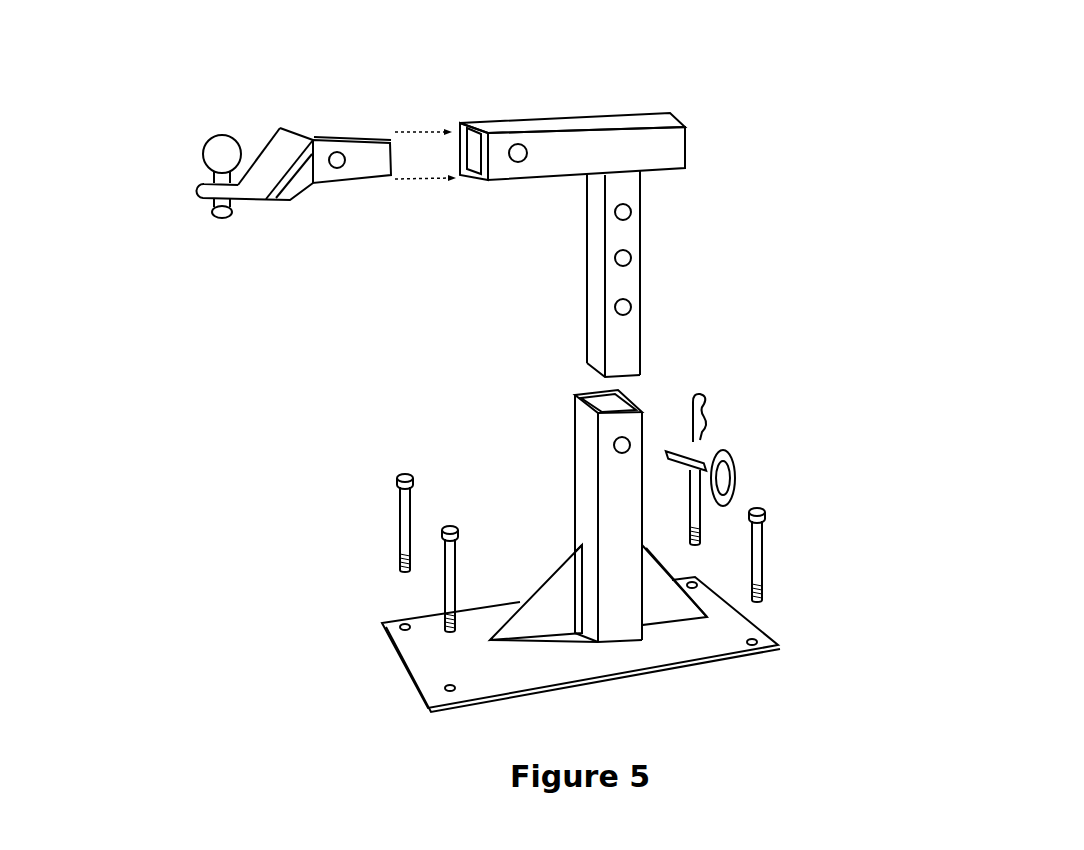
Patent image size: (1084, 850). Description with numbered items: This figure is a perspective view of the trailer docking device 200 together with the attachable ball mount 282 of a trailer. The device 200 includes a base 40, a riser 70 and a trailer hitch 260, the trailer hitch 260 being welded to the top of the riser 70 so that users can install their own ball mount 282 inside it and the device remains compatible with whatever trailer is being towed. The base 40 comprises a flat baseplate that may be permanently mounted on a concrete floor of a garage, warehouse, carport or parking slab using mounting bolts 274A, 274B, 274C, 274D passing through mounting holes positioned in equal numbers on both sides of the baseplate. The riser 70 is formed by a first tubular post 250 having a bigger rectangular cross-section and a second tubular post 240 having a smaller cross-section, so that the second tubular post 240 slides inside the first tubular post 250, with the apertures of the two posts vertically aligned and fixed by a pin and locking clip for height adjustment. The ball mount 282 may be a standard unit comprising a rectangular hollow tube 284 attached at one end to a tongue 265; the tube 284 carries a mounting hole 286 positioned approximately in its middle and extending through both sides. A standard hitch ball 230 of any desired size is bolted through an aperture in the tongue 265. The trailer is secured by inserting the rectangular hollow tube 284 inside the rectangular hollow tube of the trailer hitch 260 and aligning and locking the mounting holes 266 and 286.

The trailer docking device 200 is at (229, 665).
The base 40 is at (672, 673).
The riser 70 is at (643, 427).
The hitch ball 230 is at (203, 147).
The second tubular post 240 is at (641, 229).
The first tubular post 250 is at (575, 428).
The trailer hitch 260 is at (687, 152).
The tongue 265 is at (290, 200).
The mounting hole 266 is at (518, 145).
The mounting bolt 274A is at (763, 530).
The mounting bolt 274B is at (442, 578).
The mounting bolt 274C is at (397, 483).
The mounting bolt 274D is at (700, 450).
The ball mount 282 is at (189, 230).
The rectangular hollow tube 284 is at (350, 138).
The mounting hole 286 is at (337, 152).